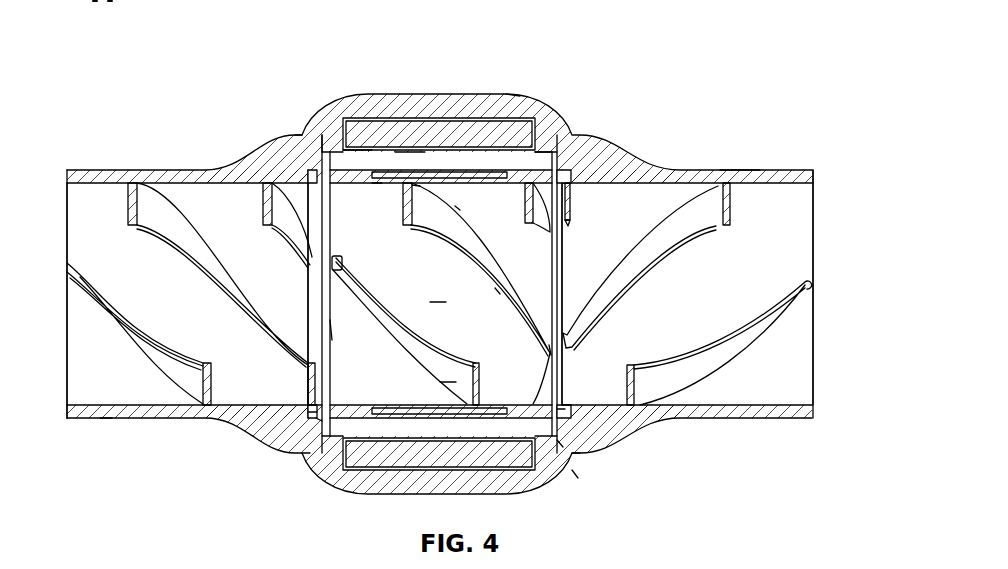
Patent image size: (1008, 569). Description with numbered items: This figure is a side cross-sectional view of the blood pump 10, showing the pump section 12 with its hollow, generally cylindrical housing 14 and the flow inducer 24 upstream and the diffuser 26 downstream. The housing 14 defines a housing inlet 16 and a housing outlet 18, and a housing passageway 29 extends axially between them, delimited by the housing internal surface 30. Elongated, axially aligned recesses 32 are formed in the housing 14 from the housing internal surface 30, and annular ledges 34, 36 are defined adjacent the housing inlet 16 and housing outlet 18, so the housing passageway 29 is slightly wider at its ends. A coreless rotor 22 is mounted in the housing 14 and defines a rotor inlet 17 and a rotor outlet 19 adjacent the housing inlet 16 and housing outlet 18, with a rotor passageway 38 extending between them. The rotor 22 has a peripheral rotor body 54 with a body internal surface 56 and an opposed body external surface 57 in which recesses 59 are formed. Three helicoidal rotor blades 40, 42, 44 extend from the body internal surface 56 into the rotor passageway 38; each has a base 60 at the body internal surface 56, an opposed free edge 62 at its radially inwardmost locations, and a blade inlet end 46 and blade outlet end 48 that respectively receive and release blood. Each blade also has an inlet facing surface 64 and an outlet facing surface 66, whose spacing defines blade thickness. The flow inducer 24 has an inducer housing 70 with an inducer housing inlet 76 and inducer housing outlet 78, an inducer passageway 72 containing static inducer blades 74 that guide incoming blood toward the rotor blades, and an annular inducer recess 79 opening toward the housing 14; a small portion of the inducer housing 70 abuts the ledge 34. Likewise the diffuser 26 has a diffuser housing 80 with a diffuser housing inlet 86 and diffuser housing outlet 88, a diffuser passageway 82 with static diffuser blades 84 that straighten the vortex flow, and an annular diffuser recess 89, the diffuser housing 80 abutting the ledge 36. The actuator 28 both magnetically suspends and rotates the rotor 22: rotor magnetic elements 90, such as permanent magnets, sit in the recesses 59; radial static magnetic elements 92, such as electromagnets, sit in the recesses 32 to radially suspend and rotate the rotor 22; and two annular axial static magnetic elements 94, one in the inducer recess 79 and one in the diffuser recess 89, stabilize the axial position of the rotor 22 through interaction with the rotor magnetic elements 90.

The pump 10 is at (218, 90).
The pump section 12 is at (439, 294).
The housing 14 is at (575, 473).
The housing inlet 16 is at (302, 453).
The rotor inlet 17 is at (313, 400).
The housing outlet 18 is at (577, 453).
The rotor outlet 19 is at (567, 406).
The rotor 22 is at (533, 402).
The flow inducer 24 is at (120, 162).
The diffuser 26 is at (768, 150).
The actuator 28 is at (410, 152).
The housing passageway 29 is at (537, 160).
The housing internal surface 30 is at (538, 162).
The recesses 32 is at (529, 118).
The annular ledge 34 is at (322, 145).
The annular ledge 36 is at (563, 445).
The rotor passageway 38 is at (332, 327).
The rotor blade 40 is at (392, 330).
The rotor blade 42 is at (472, 240).
The rotor blade 44 is at (533, 224).
The blade inlet end 46 is at (333, 256).
The blade outlet end 48 is at (550, 353).
The rotor body 54 is at (352, 408).
The body internal surface 56 is at (438, 292).
The body external surface 57 is at (363, 170).
The recesses 59 is at (377, 184).
The base 60 is at (457, 208).
The free edge 62 is at (495, 292).
The inlet facing surface 64 is at (444, 372).
The outlet facing surface 66 is at (425, 199).
The inducer housing 70 is at (106, 421).
The inducer passageway 72 is at (82, 407).
The inducer blades 74 is at (262, 198).
The inducer housing inlet 76 is at (72, 420).
The inducer housing outlet 78 is at (322, 421).
The inducer recess 79 is at (306, 172).
The diffuser housing 80 is at (738, 170).
The diffuser passageway 82 is at (800, 404).
The diffuser blades 84 is at (632, 256).
The diffuser housing inlet 86 is at (566, 185).
The diffuser housing outlet 88 is at (814, 168).
The diffuser recess 89 is at (569, 192).
The rotor magnetic elements 90 is at (392, 170).
The radial static magnetic elements 92 is at (457, 133).
The axial static magnetic elements 94 is at (315, 413).